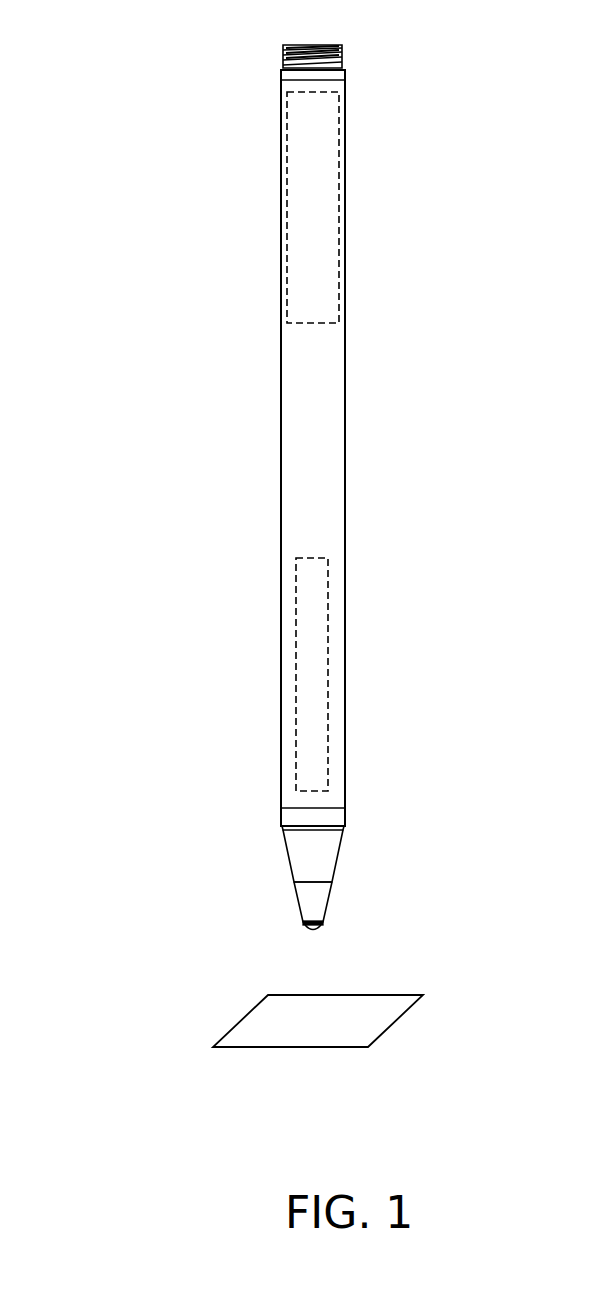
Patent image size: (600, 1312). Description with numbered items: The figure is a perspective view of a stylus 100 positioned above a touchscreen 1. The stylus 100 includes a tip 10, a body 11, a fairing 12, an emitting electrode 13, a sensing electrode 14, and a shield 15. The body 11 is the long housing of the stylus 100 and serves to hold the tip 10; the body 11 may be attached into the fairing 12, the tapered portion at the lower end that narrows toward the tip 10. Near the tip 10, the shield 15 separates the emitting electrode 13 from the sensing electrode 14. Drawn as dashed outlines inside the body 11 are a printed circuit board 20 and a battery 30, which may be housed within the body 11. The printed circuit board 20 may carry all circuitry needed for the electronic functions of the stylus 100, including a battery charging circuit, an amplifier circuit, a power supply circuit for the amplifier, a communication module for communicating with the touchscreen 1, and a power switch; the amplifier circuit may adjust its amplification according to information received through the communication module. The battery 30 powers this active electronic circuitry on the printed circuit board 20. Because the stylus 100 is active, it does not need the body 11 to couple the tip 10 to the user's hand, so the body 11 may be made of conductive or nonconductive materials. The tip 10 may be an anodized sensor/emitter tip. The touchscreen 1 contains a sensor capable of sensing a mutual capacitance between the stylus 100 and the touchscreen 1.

The stylus 100 is at (178, 138).
The touchscreen 1 is at (380, 1025).
The tip 10 is at (296, 883).
The body 11 is at (318, 390).
The fairing 12 is at (318, 838).
The emitting electrode 13 is at (307, 893).
The sensing electrode 14 is at (313, 929).
The shield 15 is at (323, 926).
The printed circuit board 20 is at (318, 685).
The battery 30 is at (317, 220).